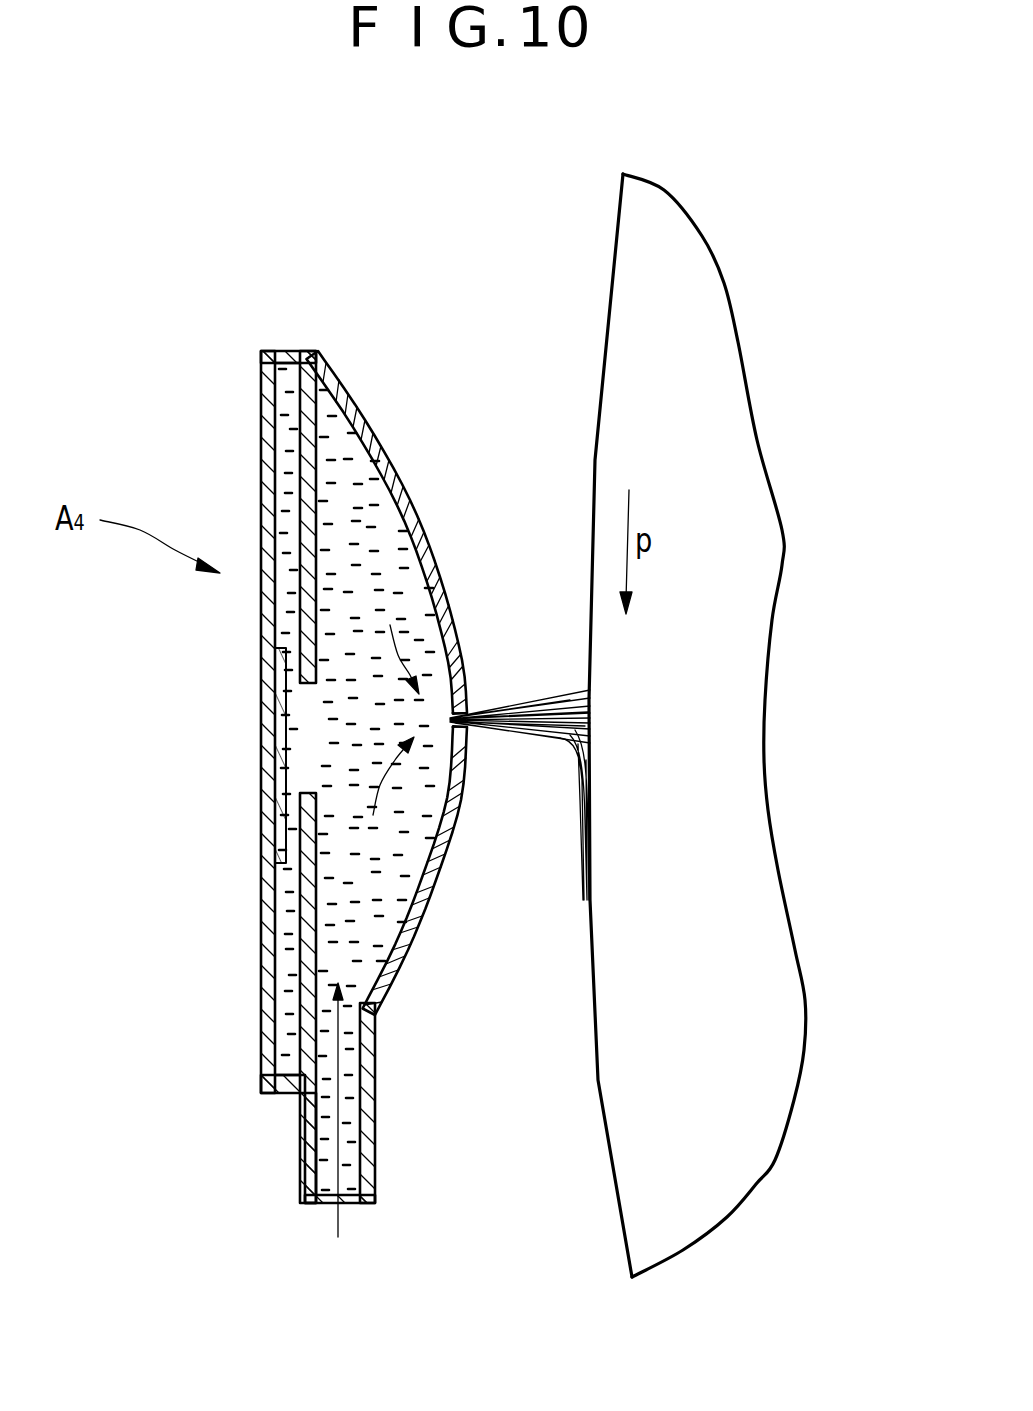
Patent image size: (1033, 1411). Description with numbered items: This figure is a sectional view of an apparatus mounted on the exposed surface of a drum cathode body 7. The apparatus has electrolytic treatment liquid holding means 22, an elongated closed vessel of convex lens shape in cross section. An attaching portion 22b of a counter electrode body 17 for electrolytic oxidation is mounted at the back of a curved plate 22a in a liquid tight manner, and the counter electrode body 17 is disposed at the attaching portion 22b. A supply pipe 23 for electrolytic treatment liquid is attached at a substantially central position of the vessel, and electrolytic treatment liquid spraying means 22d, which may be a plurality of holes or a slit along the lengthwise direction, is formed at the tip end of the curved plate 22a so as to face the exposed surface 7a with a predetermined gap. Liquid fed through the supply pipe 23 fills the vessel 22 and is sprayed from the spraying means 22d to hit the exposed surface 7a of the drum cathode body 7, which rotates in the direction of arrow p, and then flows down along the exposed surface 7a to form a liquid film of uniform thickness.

The drum cathode body 7 is at (642, 725).
The exposed surface 7a is at (594, 437).
The counter electrode body 17 is at (283, 735).
The electrolytic treatment liquid holding means 22 is at (422, 933).
The curved plate 22a is at (388, 462).
The attaching portion 22b is at (266, 440).
The electrolytic treatment liquid spraying means 22d is at (467, 762).
The supply pipe 23 is at (312, 1152).